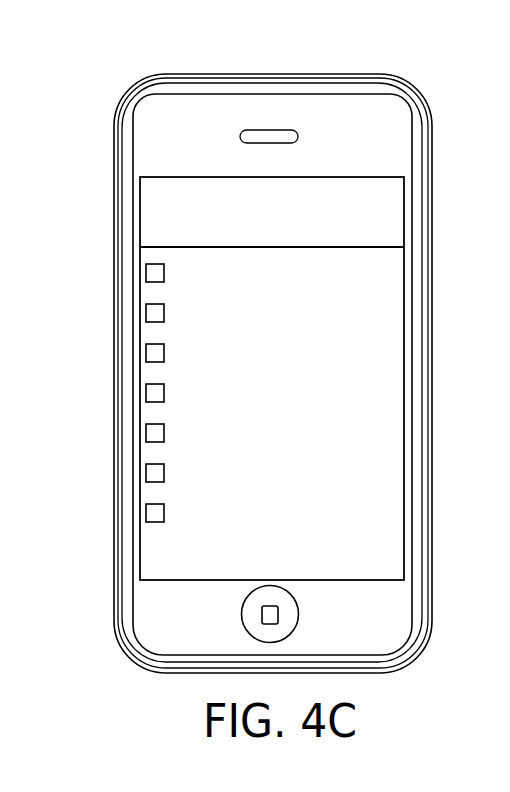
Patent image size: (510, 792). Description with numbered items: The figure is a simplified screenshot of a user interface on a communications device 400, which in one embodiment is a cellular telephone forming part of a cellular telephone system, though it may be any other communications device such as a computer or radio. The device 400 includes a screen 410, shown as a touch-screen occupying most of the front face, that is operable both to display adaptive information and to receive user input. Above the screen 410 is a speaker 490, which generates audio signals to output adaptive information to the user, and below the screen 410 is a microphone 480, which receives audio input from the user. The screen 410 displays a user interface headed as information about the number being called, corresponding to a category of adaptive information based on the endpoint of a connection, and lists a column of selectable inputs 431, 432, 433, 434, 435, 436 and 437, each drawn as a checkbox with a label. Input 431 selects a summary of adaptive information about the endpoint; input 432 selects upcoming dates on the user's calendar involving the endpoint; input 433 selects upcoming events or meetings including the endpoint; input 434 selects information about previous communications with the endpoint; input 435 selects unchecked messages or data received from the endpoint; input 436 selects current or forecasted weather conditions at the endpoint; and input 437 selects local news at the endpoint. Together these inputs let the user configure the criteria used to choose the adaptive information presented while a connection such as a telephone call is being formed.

The device 400 is at (105, 66).
The screen 410 is at (362, 177).
The speaker 490 is at (255, 130).
The microphone 480 is at (262, 614).
The input 431 is at (145, 273).
The input 432 is at (145, 313).
The input 433 is at (145, 353).
The input 434 is at (145, 393).
The input 435 is at (145, 433).
The input 436 is at (145, 473).
The input 437 is at (145, 513).